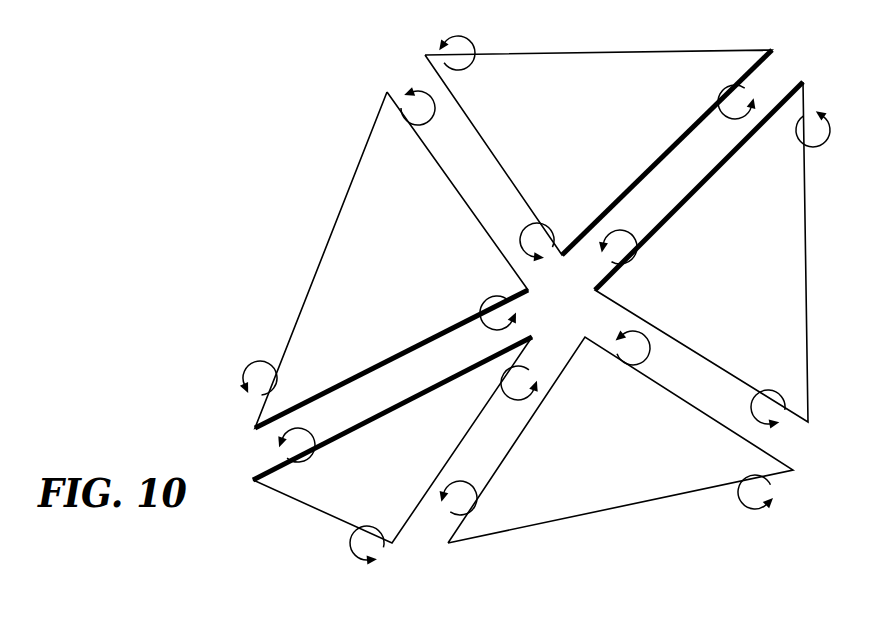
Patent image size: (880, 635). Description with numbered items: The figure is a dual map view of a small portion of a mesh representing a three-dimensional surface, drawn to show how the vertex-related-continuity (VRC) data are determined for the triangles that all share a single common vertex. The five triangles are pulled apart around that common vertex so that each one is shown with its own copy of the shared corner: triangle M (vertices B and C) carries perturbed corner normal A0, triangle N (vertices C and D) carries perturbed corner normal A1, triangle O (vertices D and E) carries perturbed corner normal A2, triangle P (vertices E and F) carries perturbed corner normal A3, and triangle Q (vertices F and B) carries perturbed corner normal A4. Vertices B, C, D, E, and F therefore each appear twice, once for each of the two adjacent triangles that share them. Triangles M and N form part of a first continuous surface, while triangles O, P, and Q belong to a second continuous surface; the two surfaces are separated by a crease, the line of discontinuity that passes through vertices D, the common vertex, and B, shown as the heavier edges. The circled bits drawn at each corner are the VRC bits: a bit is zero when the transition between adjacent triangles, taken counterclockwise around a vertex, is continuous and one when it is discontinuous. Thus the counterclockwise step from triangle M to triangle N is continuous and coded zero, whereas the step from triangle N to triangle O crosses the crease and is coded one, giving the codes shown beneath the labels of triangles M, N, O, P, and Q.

The triangle M is at (582, 116).
The triangle N is at (397, 264).
The triangle O is at (387, 456).
The triangle P is at (608, 432).
The triangle Q is at (737, 282).
The perturbed corner normal A0 is at (564, 270).
The perturbed corner normal A1 is at (540, 294).
The perturbed corner normal A2 is at (543, 338).
The perturbed corner normal A3 is at (586, 331).
The perturbed corner normal A4 is at (588, 302).
The vertex B is at (803, 57).
The vertex C is at (395, 59).
The vertex D is at (238, 462).
The vertex E is at (419, 554).
The vertex F is at (817, 455).